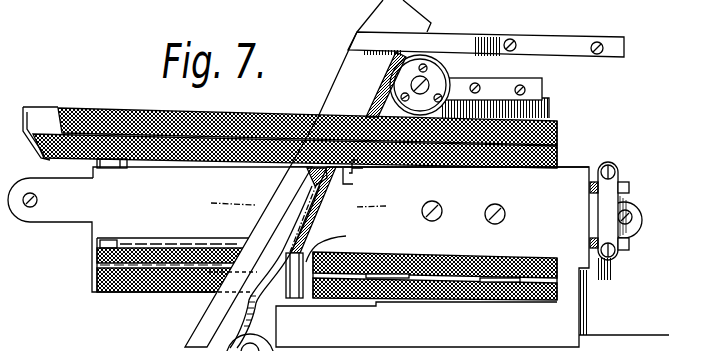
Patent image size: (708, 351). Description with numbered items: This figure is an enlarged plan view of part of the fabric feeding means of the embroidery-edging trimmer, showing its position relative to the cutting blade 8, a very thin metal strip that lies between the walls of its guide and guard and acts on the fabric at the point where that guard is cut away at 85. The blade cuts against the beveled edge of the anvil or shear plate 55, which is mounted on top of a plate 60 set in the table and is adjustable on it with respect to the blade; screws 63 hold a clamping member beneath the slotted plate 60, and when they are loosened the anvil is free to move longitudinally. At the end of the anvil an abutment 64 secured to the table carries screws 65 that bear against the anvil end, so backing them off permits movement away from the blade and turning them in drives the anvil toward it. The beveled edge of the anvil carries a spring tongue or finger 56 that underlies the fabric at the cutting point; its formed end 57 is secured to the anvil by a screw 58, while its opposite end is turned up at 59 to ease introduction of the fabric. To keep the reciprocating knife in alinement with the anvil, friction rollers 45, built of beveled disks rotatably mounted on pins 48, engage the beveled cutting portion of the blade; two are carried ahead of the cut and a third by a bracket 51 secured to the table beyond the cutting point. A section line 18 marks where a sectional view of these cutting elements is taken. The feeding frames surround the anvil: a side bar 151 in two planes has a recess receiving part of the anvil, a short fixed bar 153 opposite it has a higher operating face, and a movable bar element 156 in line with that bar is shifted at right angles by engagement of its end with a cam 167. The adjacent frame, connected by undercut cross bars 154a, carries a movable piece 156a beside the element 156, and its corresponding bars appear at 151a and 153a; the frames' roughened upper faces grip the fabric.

The cutting blade 8 is at (235, 344).
The section line 18 is at (299, 206).
The friction rollers 45 is at (445, 79).
The pins 48 is at (411, 83).
The bracket 51 is at (480, 79).
The anvil or shear plate 55 is at (462, 183).
The spring tongue or finger 56 is at (318, 213).
The formed end 57 is at (359, 184).
The screw 58 is at (364, 168).
The turned-up end 59 is at (335, 244).
The plate 60 is at (338, 257).
The screws 63 is at (440, 216).
The abutment 64 is at (610, 206).
The screws 65 is at (629, 188).
The cut-away portion of guard 85 is at (284, 180).
The side bar 151 is at (168, 253).
The lower block lower band 151a is at (140, 287).
The short fixed bar 153 is at (551, 133).
The hatched plate 153a is at (490, 163).
The cross bars 154a is at (107, 243).
The movable bar element 156 is at (115, 125).
The movable piece 156a is at (167, 148).
The cam 167 is at (45, 116).